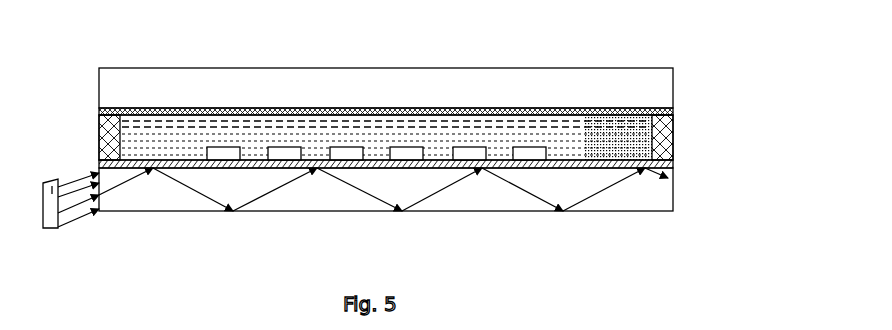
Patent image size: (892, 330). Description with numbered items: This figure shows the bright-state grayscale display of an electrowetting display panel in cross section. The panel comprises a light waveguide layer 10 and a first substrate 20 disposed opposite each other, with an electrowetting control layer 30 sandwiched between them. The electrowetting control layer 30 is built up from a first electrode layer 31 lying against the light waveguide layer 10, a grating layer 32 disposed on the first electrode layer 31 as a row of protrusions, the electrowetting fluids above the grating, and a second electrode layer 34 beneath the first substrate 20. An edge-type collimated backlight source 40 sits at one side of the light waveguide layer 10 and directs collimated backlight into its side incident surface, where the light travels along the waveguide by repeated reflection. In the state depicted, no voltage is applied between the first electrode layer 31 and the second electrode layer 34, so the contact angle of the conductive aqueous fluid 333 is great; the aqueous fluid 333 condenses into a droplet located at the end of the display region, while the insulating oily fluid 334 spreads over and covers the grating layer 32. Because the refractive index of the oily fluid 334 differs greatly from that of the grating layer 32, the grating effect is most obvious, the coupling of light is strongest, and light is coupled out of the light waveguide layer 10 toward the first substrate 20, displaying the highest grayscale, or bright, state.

The light waveguide layer 10 is at (682, 183).
The first substrate 20 is at (682, 87).
The electrowetting control layer 30 is at (425, 190).
The first electrode layer 31 is at (240, 167).
The grating layer 32 is at (343, 150).
The second electrode layer 34 is at (350, 109).
The edge-type collimated backlight source 40 is at (45, 183).
The aqueous fluid 333 is at (613, 150).
The oily fluid 334 is at (497, 123).